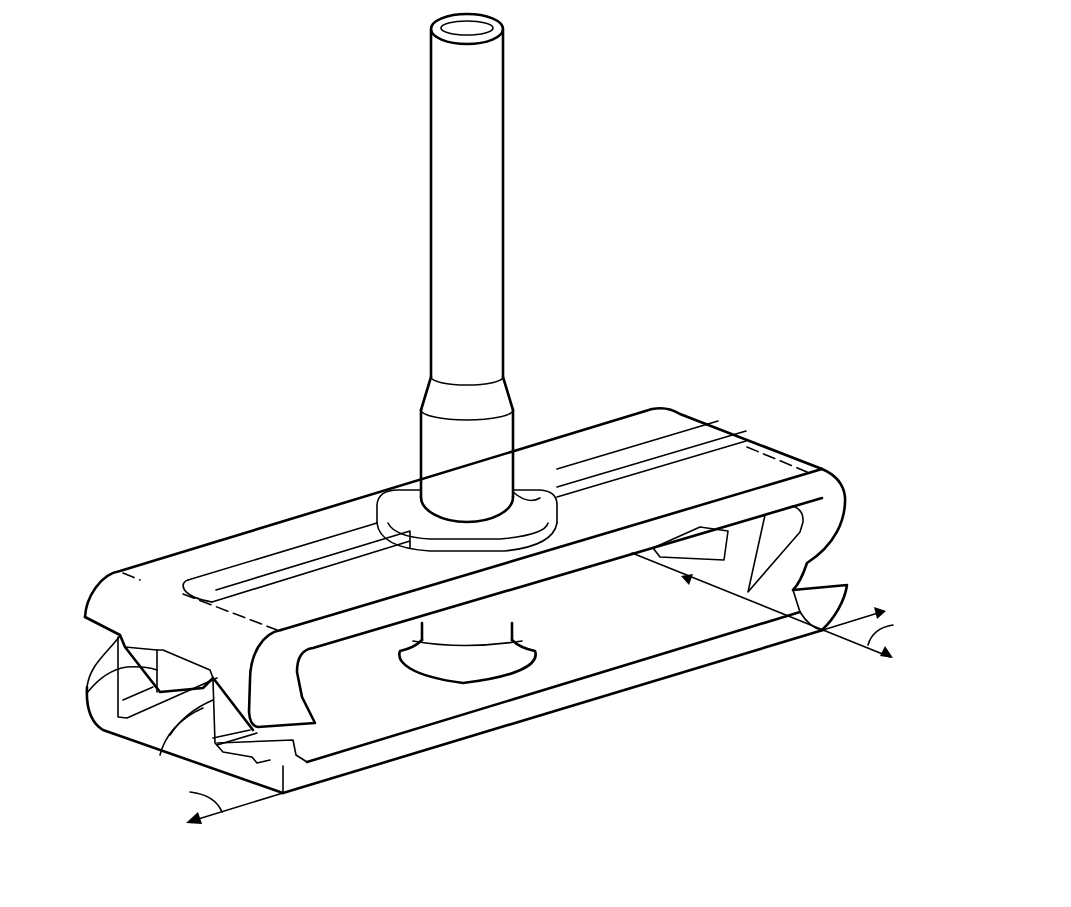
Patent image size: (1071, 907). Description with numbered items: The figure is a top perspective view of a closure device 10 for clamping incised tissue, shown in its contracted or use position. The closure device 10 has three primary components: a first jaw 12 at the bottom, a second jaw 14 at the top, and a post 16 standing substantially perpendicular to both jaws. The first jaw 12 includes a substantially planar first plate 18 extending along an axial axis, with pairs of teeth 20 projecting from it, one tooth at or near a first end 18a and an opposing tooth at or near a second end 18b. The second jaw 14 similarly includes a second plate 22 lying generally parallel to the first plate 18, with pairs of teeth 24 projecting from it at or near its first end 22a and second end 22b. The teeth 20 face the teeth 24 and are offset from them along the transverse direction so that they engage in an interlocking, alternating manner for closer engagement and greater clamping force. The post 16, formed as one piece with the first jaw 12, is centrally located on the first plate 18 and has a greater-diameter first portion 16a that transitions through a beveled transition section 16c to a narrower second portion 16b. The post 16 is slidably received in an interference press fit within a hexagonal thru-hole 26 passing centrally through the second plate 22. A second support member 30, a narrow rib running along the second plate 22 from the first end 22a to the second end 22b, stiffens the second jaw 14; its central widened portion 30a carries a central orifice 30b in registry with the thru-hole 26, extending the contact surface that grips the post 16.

The closure device 10 is at (678, 85).
The first jaw 12 is at (442, 758).
The second jaw 14 is at (296, 504).
The post 16 is at (510, 169).
The first portion 16a is at (418, 443).
The second portion 16b is at (505, 214).
The beveled transition section 16c is at (425, 390).
The first plate 18 is at (580, 692).
The first end 18a is at (283, 795).
The second end 18b is at (818, 640).
The teeth 20 is at (107, 668).
The second plate 22 is at (598, 442).
The first end 22a is at (160, 578).
The second end 22b is at (770, 455).
The teeth 24 is at (803, 550).
The thru-hole 26 is at (550, 503).
The second support member 30 is at (260, 567).
The widened portion 30a is at (402, 502).
The central orifice 30b is at (452, 512).